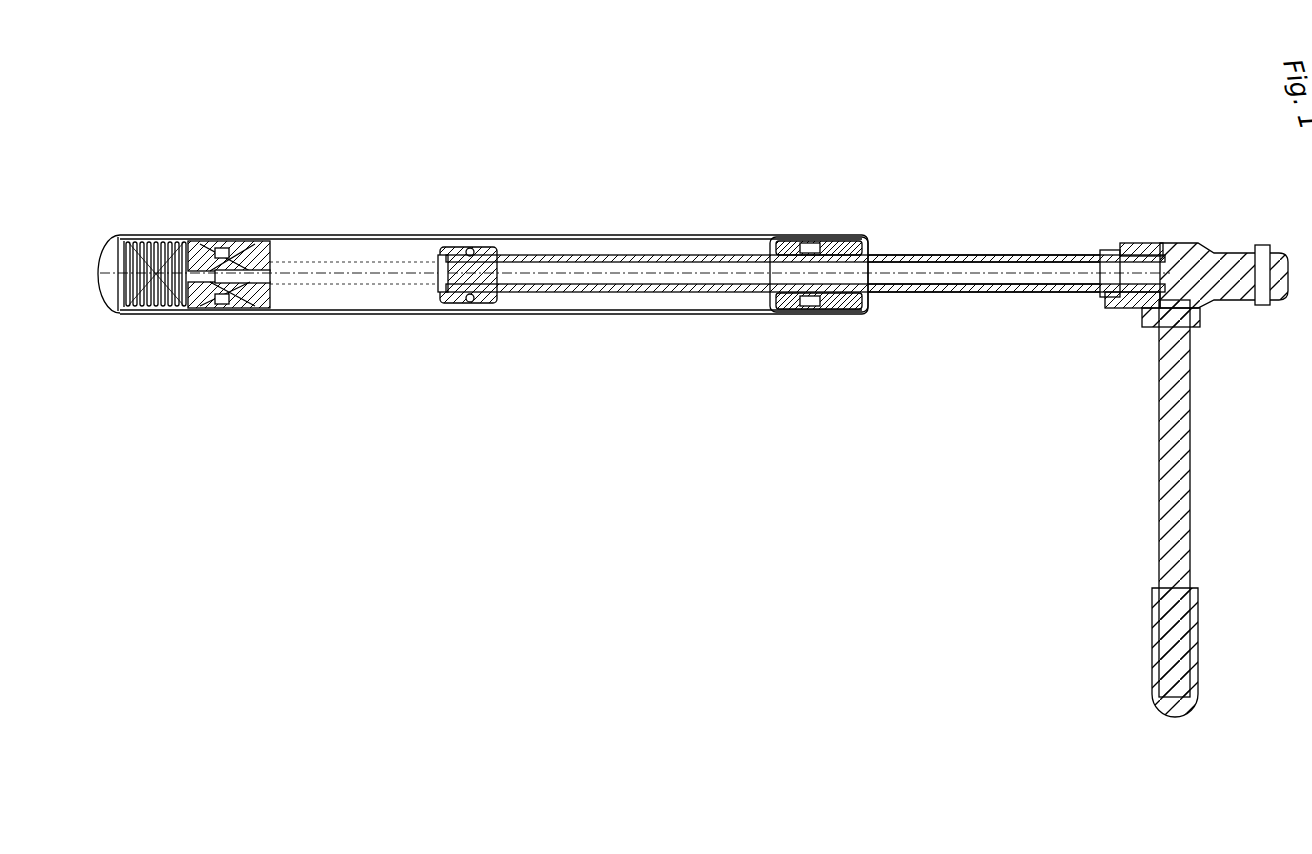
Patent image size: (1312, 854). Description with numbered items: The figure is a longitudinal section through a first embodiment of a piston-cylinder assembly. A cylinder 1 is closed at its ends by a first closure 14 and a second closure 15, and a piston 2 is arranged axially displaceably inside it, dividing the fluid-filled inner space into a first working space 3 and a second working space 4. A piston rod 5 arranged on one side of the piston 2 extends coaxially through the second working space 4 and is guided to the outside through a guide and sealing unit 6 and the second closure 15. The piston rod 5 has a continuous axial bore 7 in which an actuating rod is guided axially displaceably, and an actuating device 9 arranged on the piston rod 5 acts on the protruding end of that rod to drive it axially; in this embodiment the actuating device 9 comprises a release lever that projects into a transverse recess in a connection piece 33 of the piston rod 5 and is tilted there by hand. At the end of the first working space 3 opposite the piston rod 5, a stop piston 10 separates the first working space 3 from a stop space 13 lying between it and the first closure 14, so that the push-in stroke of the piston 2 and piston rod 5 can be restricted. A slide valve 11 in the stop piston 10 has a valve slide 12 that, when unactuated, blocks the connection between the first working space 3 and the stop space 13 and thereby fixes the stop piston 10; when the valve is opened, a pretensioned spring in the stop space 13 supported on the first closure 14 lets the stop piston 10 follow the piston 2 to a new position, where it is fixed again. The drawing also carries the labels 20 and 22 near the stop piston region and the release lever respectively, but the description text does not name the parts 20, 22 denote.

The cylinder 1 is at (397, 316).
The piston 2 is at (473, 312).
The first working space 3 is at (344, 278).
The second working space 4 is at (596, 300).
The piston rod 5 is at (985, 296).
The guide and sealing unit 6 is at (808, 320).
The axial bore 7 is at (924, 300).
The actuating device 9 is at (1075, 548).
The stop piston 10 is at (958, 255).
The slide valve 11 is at (232, 240).
The valve slide 12 is at (1160, 243).
The stop space 13 is at (117, 316).
The first closure 14 is at (104, 262).
The second closure 15 is at (848, 316).
The connector 20 is at (218, 316).
The handle 22 is at (1172, 512).
The connection piece 33 is at (1281, 300).